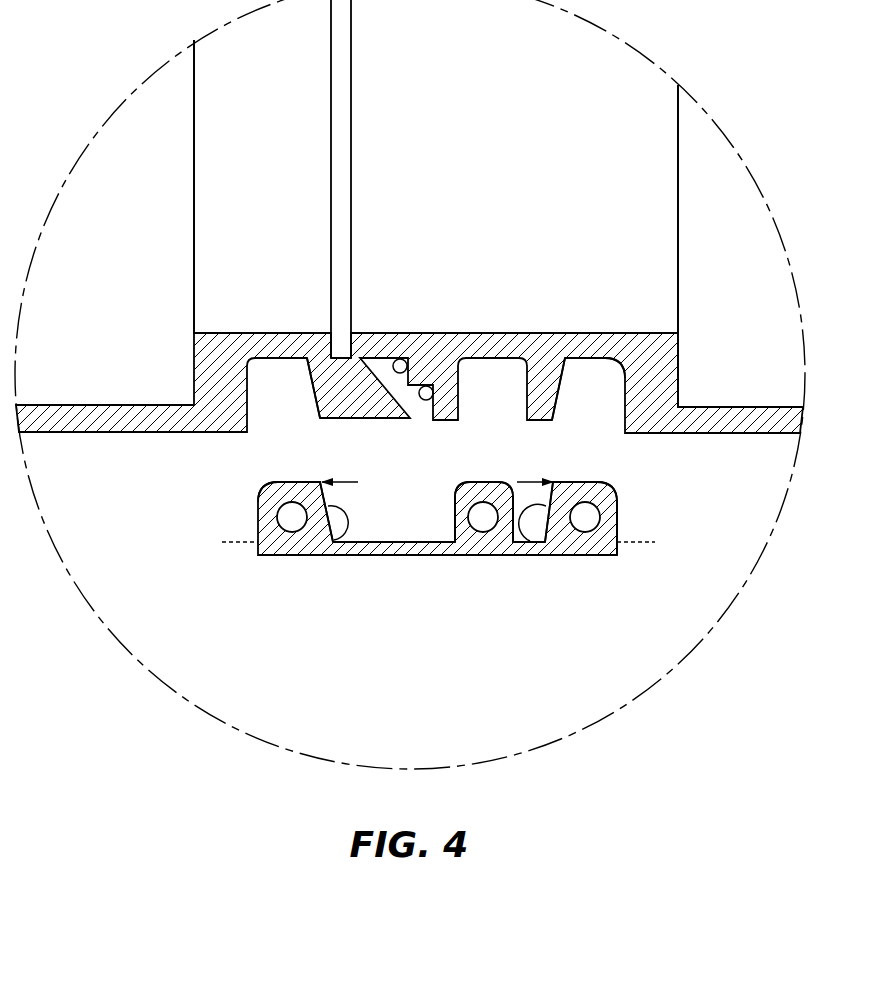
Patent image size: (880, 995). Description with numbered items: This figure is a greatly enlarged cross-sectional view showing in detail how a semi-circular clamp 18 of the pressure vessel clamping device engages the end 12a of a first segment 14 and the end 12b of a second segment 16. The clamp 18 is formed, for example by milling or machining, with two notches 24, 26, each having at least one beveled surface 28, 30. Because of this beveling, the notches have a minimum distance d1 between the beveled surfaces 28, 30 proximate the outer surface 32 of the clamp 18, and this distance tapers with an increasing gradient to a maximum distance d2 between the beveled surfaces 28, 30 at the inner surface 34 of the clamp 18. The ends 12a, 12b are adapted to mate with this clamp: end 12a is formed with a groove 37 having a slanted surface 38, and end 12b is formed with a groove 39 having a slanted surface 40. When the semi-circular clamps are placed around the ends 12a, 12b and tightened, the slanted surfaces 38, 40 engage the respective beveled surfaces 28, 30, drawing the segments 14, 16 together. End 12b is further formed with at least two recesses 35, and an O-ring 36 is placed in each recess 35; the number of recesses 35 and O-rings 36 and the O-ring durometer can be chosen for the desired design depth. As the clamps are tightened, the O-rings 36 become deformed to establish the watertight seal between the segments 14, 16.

The first segment 14 is at (95, 259).
The end of first segment 12a is at (295, 259).
The end of second segment 12b is at (513, 259).
The second segment 16 is at (703, 259).
The semi-circular clamp 18 is at (406, 560).
The notch 24 is at (412, 516).
The notch 26 is at (530, 496).
The beveled surface 28 is at (331, 545).
The beveled surface 30 is at (544, 544).
The outer surface of clamp 32 is at (584, 556).
The inner surface of clamp 34 is at (474, 482).
The recess 35 is at (423, 412).
The O-ring 36 is at (424, 357).
The groove 37 is at (276, 384).
The slanted surface 38 is at (310, 378).
The groove 39 is at (601, 390).
The slanted surface 40 is at (565, 354).
The minimum distance d1 is at (630, 542).
The maximum distance d2 is at (350, 482).